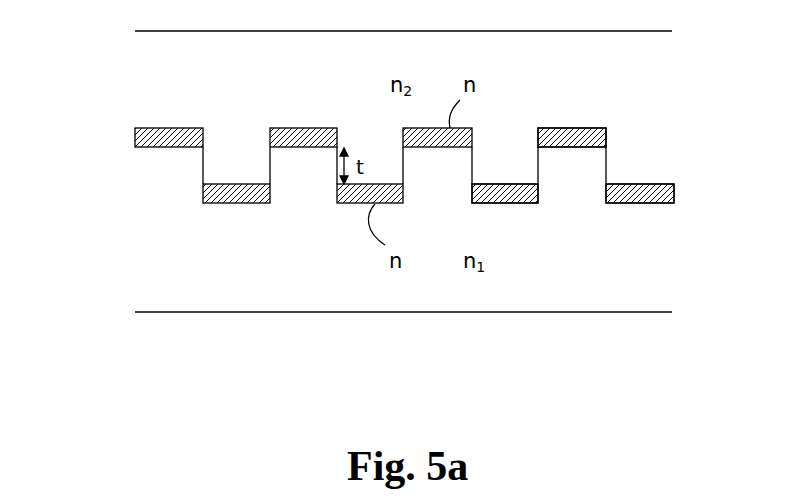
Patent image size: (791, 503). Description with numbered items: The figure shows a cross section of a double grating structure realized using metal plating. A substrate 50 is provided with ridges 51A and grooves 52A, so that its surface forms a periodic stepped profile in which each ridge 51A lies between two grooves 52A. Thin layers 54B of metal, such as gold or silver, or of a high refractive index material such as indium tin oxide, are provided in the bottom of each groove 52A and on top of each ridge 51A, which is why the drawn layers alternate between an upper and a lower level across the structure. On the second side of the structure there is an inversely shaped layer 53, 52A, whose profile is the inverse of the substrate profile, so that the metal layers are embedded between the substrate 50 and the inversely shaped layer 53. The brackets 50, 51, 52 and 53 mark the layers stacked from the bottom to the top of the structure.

The substrate 50 is at (113, 207).
The lower layer of the grating structure 51 is at (112, 185).
The upper layer of the grating structure 52 is at (112, 128).
The inversely shaped layer 53 is at (113, 31).
The ridge 51A is at (573, 205).
The groove 52A is at (647, 150).
The thin layer of metal 54B is at (583, 128).